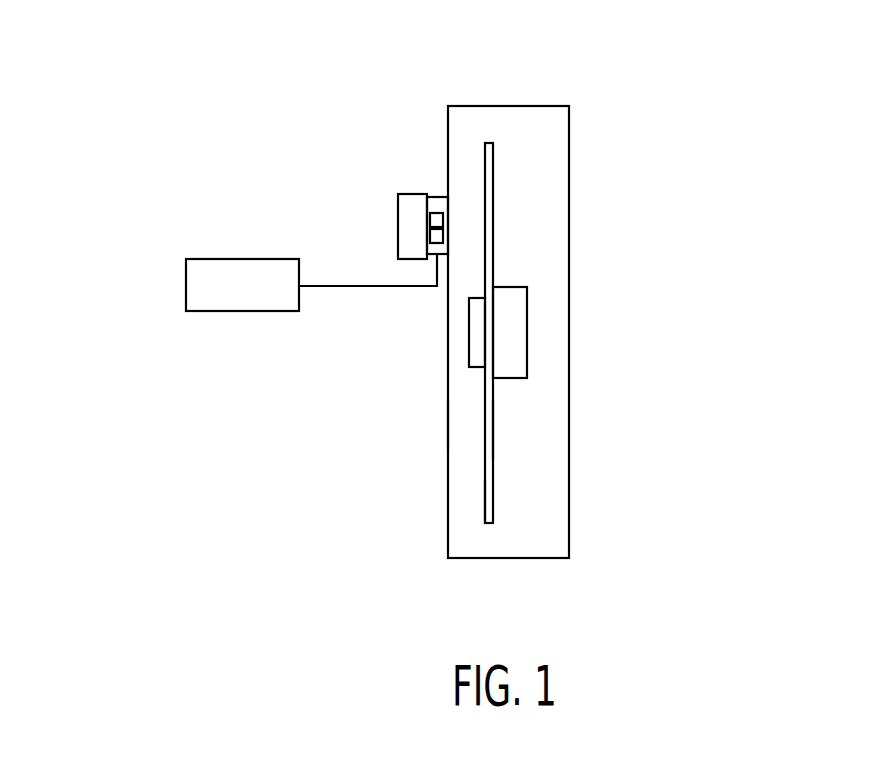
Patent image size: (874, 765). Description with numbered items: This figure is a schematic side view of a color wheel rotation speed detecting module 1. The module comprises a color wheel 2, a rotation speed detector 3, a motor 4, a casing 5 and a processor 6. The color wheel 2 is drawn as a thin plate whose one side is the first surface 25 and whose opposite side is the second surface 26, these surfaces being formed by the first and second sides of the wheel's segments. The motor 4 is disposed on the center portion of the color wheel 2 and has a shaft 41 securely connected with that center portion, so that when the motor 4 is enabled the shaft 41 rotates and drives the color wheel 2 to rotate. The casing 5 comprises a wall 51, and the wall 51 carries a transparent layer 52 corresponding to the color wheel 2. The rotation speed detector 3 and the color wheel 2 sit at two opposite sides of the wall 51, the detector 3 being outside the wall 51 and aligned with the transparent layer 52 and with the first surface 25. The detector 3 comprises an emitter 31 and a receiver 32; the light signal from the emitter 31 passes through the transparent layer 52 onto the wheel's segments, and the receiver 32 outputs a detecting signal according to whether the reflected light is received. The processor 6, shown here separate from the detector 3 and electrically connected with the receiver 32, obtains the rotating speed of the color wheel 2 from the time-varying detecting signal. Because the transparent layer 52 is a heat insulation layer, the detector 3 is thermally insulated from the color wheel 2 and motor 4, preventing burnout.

The color wheel rotation speed detecting module 1 is at (865, 104).
The color wheel 2 is at (493, 538).
The first surface 25 is at (485, 508).
The second surface 26 is at (493, 431).
The rotation speed detector 3 is at (405, 208).
The emitter 31 is at (448, 203).
The receiver 32 is at (443, 243).
The motor 4 is at (543, 312).
The shaft 41 is at (476, 328).
The casing 5 is at (483, 106).
The wall 51 is at (448, 425).
The transparent layer 52 is at (443, 213).
The processor 6 is at (183, 284).